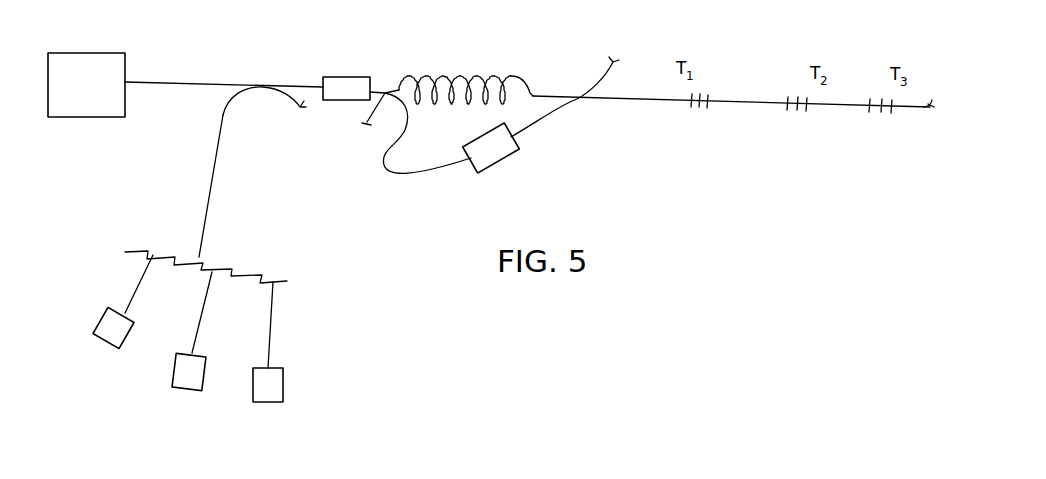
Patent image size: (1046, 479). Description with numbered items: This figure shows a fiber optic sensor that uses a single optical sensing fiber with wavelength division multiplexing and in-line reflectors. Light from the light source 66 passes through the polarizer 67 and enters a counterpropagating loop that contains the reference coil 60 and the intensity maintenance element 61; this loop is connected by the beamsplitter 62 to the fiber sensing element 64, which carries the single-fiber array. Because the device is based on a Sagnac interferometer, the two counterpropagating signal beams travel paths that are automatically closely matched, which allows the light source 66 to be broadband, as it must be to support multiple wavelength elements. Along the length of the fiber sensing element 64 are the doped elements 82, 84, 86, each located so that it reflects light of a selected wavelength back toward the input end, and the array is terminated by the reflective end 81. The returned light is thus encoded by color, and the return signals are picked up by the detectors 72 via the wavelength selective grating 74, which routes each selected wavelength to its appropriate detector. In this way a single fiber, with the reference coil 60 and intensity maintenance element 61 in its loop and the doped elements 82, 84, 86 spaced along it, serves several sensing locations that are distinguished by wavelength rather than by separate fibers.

The light source 66 is at (107, 58).
The polarizer 67 is at (352, 77).
The reference coil 60 is at (462, 76).
The intensity maintenance element 61 is at (498, 162).
The beamsplitter 62 is at (577, 104).
The fiber sensing element 64 is at (748, 102).
The doped element 82 is at (698, 109).
The doped element 84 is at (795, 112).
The doped element 86 is at (880, 115).
The reflective end 81 is at (926, 110).
The wavelength selective grating 74 is at (262, 271).
The detectors 72 is at (197, 335).